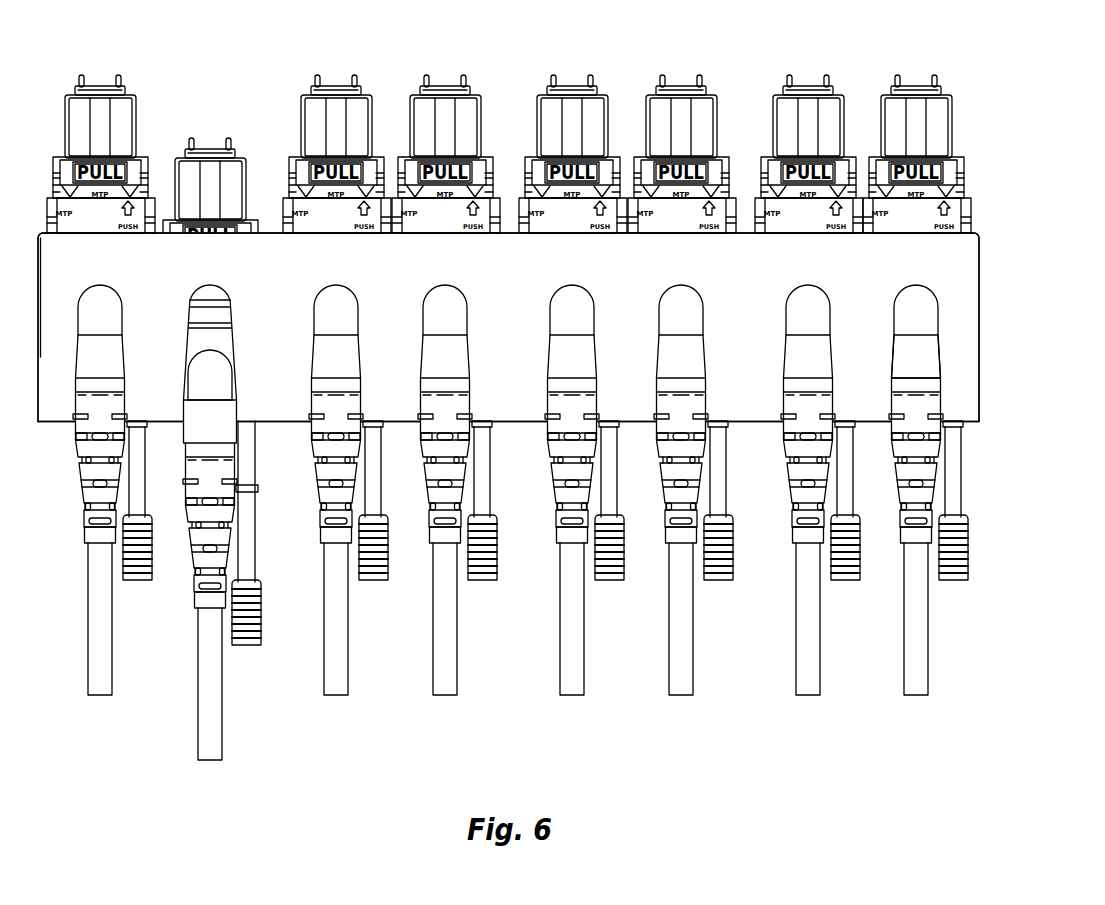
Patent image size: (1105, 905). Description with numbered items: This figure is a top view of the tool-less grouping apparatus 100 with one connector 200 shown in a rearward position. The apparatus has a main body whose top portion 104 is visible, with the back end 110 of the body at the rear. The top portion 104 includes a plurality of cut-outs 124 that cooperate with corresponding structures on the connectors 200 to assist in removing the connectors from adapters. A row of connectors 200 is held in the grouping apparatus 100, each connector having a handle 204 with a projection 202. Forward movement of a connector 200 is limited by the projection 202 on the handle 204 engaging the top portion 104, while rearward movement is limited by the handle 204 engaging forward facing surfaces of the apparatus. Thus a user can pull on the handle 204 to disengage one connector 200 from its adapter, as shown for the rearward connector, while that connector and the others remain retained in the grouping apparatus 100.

The tool-less grouping apparatus 100 is at (1000, 246).
The top portion 104 is at (963, 397).
The back end 110 is at (978, 422).
The connector 200 is at (983, 143).
The projection 202 is at (918, 299).
The cut-outs 124 is at (941, 365).
The handle 204 is at (967, 518).